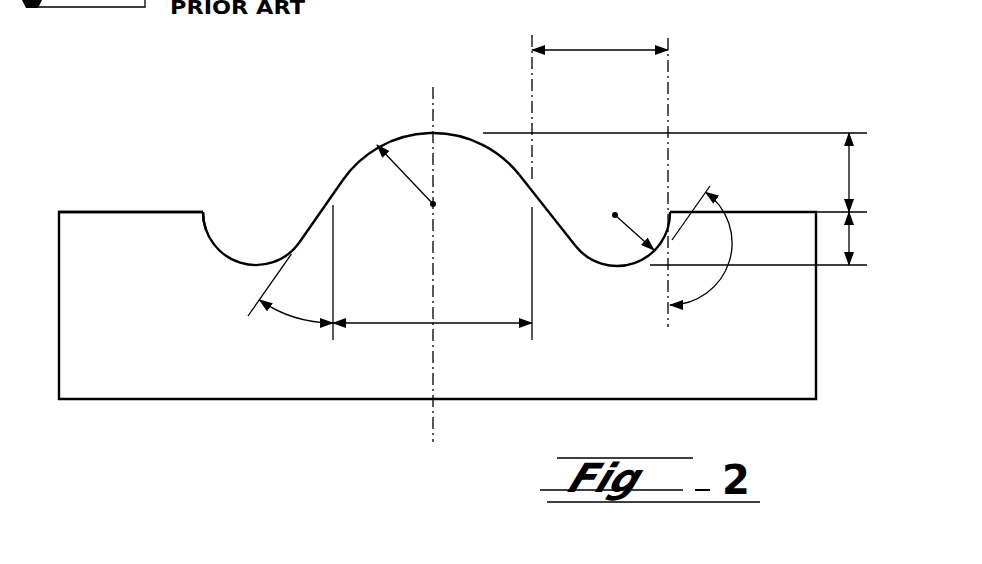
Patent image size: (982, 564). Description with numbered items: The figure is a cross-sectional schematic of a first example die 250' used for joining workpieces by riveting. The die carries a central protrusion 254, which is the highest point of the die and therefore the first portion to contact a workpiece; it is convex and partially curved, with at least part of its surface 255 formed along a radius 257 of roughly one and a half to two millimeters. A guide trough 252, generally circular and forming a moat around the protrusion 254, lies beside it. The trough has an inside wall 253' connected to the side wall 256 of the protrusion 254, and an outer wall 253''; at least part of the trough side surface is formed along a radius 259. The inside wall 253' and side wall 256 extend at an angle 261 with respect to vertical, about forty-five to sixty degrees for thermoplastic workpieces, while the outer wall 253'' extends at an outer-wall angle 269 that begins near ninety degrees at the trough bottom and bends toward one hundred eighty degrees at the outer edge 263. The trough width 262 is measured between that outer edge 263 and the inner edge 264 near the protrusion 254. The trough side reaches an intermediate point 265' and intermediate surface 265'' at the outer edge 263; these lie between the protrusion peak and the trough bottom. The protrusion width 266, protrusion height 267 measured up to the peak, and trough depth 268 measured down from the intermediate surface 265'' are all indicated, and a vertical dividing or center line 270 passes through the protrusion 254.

The first example die 250' is at (437, 305).
The guide trough 252 is at (410, 157).
The inside wall of the trough 253' is at (328, 150).
The outer wall of the trough 253'' is at (242, 177).
The protrusion 254 is at (473, 157).
The surface of the protrusion 255 is at (450, 127).
The side wall of the protrusion 256 is at (552, 140).
The radius of the protrusion 257 is at (405, 174).
The radius of the trough side 259 is at (632, 246).
The angle of the inside wall 261 is at (293, 318).
The width of the guide trough 262 is at (597, 50).
The outer edge of the trough 263 is at (667, 215).
The inner edge of the trough 264 is at (541, 198).
The intermediate point 265' is at (154, 172).
The intermediate surface 265'' is at (127, 145).
The width of the protrusion 266 is at (420, 325).
The height of the protrusion 267 is at (851, 167).
The depth of the trough 268 is at (851, 237).
The outer-wall angle 269 is at (737, 246).
The center line 270 is at (437, 368).